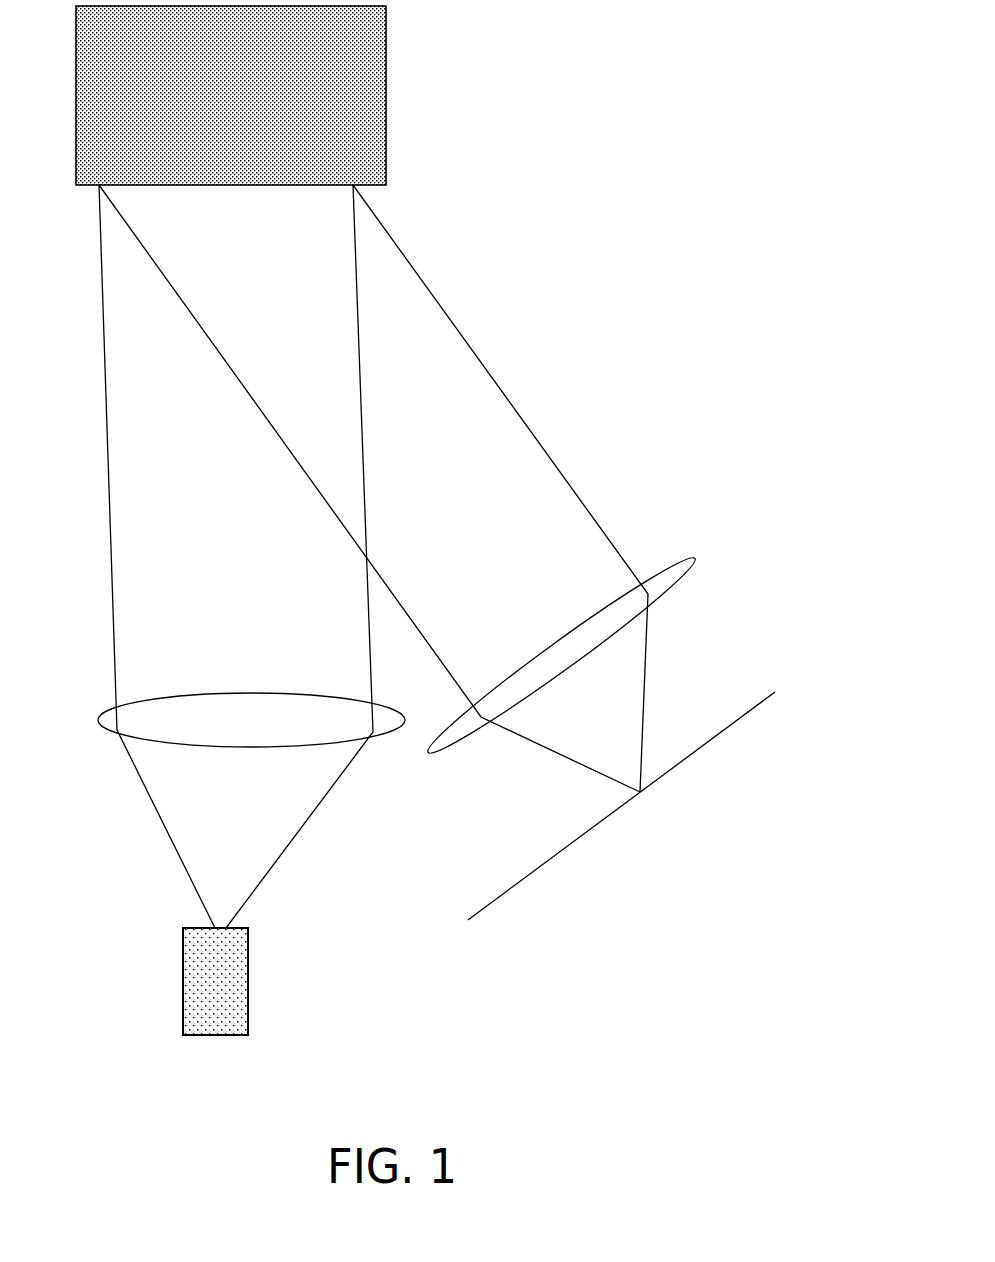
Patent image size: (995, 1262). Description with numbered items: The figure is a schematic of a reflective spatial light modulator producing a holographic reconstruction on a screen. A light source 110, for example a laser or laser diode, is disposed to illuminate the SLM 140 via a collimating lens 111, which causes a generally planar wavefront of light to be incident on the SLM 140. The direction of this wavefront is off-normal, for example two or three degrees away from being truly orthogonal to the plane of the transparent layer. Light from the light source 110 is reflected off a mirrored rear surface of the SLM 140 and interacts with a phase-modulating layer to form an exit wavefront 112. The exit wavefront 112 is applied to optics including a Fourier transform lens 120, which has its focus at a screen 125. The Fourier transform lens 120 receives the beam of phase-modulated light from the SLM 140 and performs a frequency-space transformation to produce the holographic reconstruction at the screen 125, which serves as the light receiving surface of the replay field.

The SLM 140 is at (387, 50).
The exit wavefront 112 is at (458, 330).
The collimating lens 111 is at (98, 726).
The Fourier transform lens 120 is at (670, 563).
The screen 125 is at (520, 883).
The light source 110 is at (228, 980).